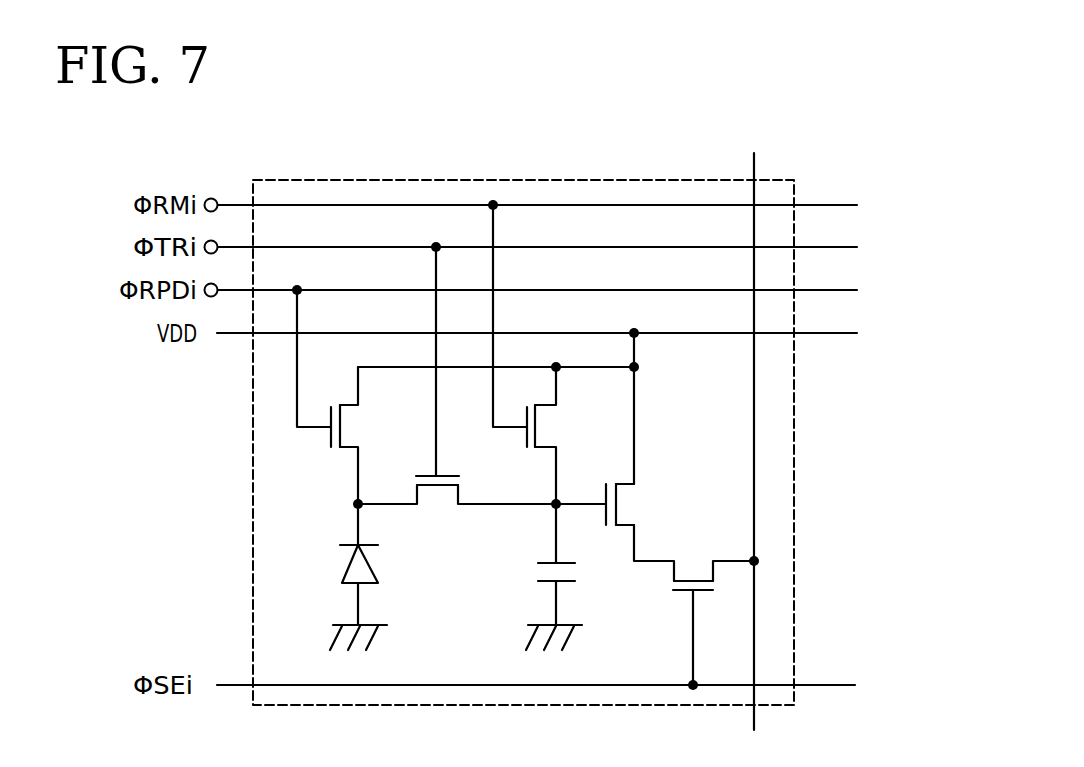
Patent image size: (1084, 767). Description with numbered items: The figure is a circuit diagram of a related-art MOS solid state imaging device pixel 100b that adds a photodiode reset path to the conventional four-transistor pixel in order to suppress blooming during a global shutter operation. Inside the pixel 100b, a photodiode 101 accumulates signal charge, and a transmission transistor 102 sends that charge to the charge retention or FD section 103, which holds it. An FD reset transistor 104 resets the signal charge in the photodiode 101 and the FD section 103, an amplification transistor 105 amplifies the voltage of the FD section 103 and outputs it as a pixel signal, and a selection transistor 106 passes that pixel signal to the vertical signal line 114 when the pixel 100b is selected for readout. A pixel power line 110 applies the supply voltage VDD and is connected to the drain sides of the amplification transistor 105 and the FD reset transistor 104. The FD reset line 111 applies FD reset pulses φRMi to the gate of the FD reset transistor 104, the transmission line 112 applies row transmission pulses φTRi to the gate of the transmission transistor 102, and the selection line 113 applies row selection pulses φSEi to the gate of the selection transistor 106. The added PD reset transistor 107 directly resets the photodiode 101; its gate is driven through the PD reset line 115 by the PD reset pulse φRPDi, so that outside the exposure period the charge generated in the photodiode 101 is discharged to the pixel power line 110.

The pixel 100b is at (450, 180).
The photodiode 101 is at (345, 570).
The transmission transistor 102 is at (437, 490).
The charge retention (FD) section 103 is at (549, 582).
The FD reset transistor 104 is at (538, 427).
The amplification transistor 105 is at (618, 505).
The selection transistor 106 is at (693, 578).
The PD reset transistor 107 is at (342, 427).
The pixel power line 110 is at (826, 333).
The FD reset line 111 is at (826, 205).
The transmission line 112 is at (826, 247).
The selection line 113 is at (826, 685).
The vertical signal line 114 is at (755, 165).
The PD reset line 115 is at (826, 290).